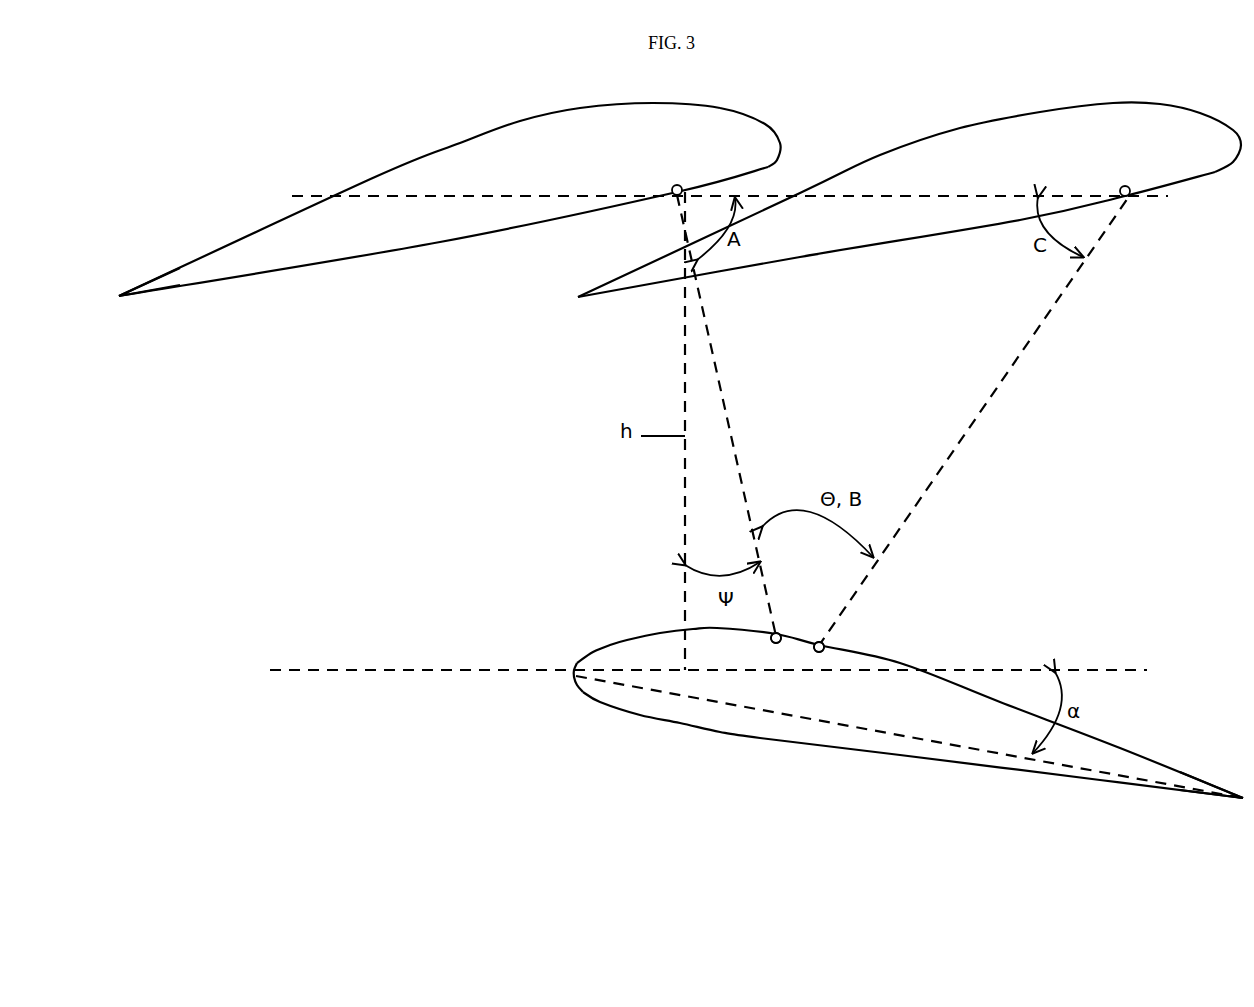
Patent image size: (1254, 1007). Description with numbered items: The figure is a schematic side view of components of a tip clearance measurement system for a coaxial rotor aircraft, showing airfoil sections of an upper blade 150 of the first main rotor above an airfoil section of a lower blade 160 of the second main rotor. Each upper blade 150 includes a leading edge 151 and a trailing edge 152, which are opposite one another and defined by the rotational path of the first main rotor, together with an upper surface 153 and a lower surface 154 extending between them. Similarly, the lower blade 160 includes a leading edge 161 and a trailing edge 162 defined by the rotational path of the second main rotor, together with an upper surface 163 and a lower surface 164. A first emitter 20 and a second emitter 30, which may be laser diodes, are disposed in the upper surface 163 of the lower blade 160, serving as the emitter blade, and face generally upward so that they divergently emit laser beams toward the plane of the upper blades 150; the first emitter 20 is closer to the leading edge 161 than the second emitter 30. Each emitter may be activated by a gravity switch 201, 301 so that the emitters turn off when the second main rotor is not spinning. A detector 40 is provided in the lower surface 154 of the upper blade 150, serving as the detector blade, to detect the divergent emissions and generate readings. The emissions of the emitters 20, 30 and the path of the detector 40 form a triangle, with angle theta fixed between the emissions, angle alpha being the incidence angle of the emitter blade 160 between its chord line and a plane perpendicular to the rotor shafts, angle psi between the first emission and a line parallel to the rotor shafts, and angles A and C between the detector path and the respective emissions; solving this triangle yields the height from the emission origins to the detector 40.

The upper blade 150 is at (478, 203).
The leading edge 151 is at (781, 146).
The trailing edge 152 is at (120, 294).
The upper surface 153 is at (470, 140).
The lower surface 154 is at (388, 252).
The detector 40 is at (670, 184).
The first emitter 20 is at (780, 632).
The second emitter 30 is at (826, 644).
The gravity switch 201 is at (778, 643).
The gravity switch 301 is at (822, 652).
The lower blade 160 is at (848, 718).
The leading edge 161 is at (576, 687).
The trailing edge 162 is at (1243, 797).
The upper surface 163 is at (973, 689).
The lower surface 164 is at (742, 735).